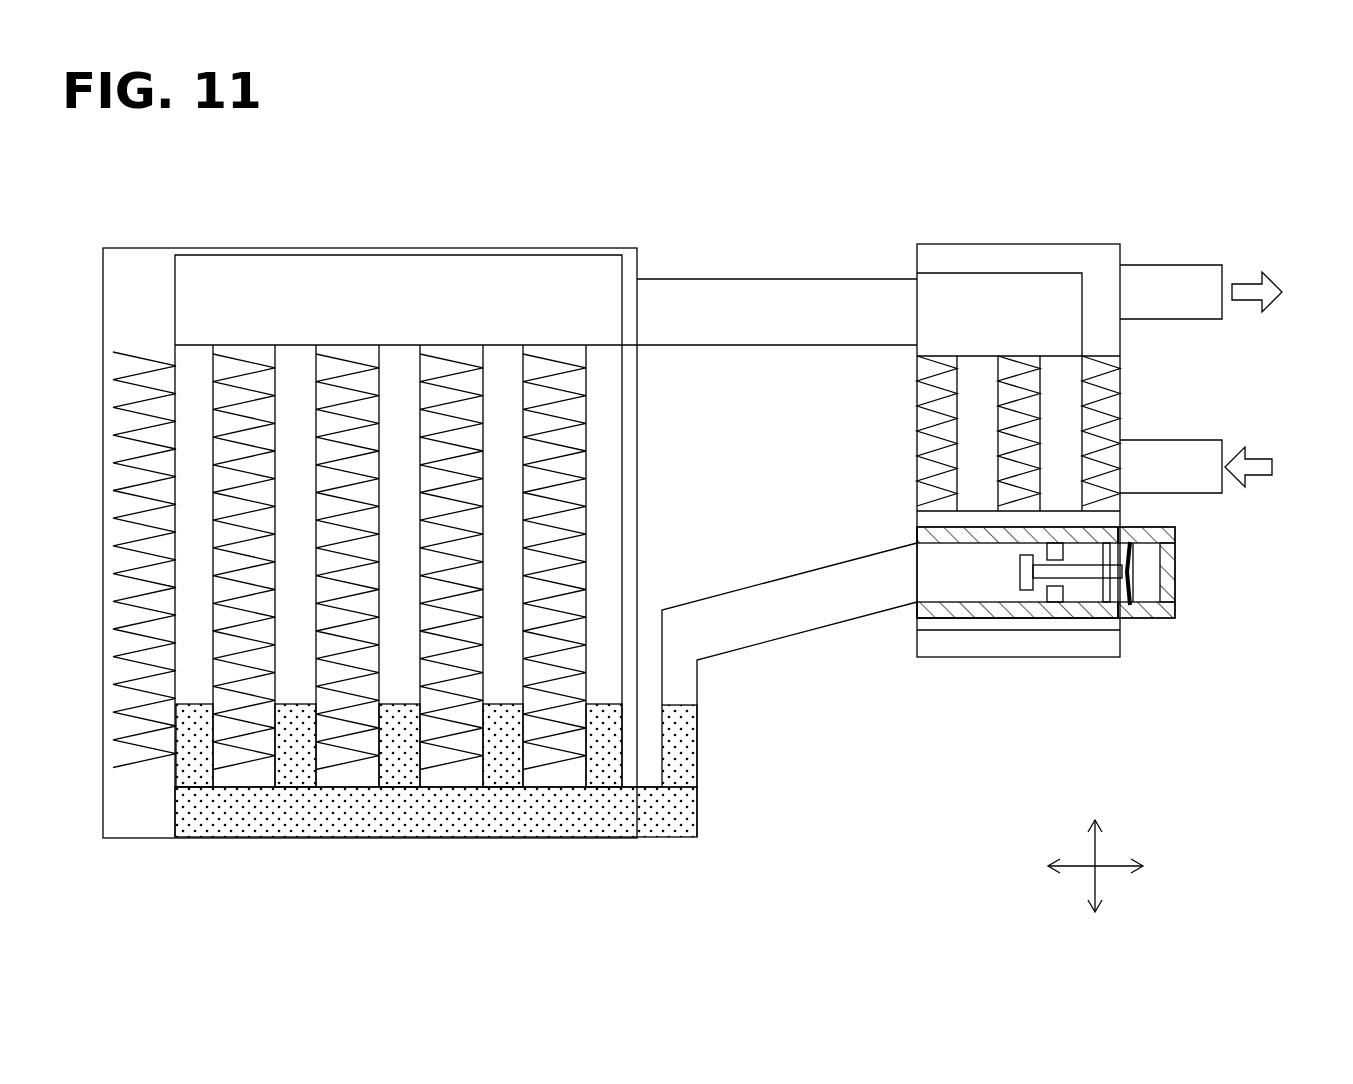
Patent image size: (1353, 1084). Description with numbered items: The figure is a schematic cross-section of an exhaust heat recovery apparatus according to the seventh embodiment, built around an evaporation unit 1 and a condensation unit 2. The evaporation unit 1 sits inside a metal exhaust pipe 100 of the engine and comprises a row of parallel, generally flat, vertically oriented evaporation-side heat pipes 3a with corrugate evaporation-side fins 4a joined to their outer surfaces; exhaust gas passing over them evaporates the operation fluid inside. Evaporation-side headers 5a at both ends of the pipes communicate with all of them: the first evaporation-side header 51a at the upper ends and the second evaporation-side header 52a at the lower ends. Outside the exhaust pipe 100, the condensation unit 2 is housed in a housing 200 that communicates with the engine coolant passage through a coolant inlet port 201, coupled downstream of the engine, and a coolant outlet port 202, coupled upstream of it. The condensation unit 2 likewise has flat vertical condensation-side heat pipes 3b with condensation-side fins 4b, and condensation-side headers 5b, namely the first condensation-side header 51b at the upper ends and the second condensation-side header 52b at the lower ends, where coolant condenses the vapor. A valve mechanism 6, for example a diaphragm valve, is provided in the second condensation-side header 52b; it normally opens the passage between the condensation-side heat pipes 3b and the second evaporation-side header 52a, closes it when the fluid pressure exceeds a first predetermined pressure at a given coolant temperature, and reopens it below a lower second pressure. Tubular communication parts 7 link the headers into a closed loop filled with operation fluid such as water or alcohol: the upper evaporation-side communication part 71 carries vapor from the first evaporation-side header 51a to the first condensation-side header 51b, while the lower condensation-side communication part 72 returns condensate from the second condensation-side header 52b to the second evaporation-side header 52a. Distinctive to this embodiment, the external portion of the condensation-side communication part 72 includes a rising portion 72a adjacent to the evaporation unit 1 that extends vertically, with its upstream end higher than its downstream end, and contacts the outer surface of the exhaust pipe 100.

The exhaust pipe 100 is at (143, 248).
The evaporation unit 1 is at (349, 479).
The evaporation-side heat pipes 3a is at (380, 352).
The evaporation-side fins 4a is at (443, 358).
The evaporation-side headers 5a is at (546, 526).
The first evaporation-side header 51a is at (542, 276).
The second evaporation-side header 52a is at (250, 815).
The communication parts 7 is at (777, 513).
The evaporation-side communication part 71 is at (739, 296).
The condensation-side communication part 72 is at (737, 594).
The rising portion 72a is at (690, 775).
The housing 200 is at (1103, 244).
The condensation unit 2 is at (1068, 466).
The condensation-side heat pipes 3b is at (1088, 367).
The condensation-side fins 4b is at (1095, 415).
The condensation-side headers 5b is at (1018, 475).
The first condensation-side header 51b is at (986, 302).
The second condensation-side header 52b is at (995, 627).
The valve mechanism 6 is at (1090, 584).
The coolant inlet port 201 is at (1195, 482).
The coolant outlet port 202 is at (1175, 278).